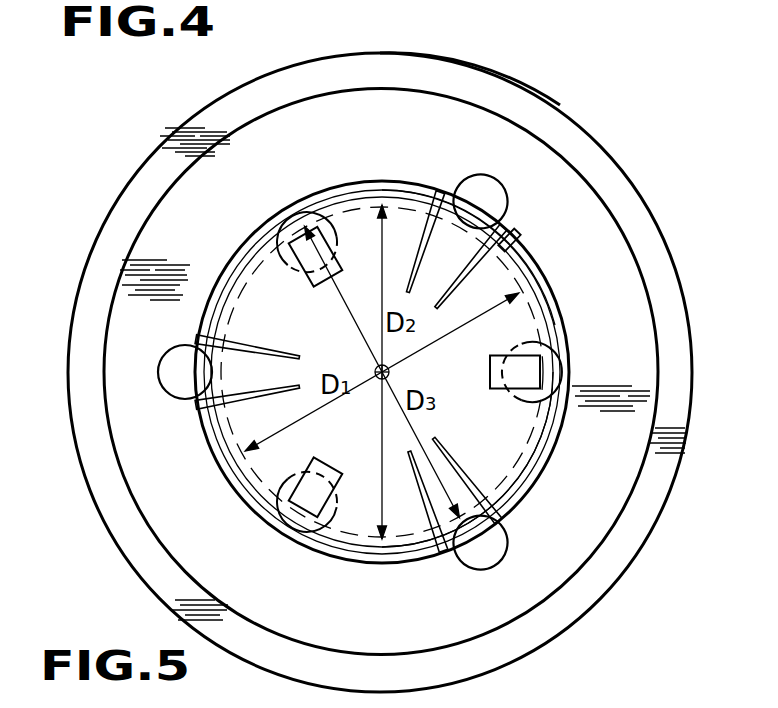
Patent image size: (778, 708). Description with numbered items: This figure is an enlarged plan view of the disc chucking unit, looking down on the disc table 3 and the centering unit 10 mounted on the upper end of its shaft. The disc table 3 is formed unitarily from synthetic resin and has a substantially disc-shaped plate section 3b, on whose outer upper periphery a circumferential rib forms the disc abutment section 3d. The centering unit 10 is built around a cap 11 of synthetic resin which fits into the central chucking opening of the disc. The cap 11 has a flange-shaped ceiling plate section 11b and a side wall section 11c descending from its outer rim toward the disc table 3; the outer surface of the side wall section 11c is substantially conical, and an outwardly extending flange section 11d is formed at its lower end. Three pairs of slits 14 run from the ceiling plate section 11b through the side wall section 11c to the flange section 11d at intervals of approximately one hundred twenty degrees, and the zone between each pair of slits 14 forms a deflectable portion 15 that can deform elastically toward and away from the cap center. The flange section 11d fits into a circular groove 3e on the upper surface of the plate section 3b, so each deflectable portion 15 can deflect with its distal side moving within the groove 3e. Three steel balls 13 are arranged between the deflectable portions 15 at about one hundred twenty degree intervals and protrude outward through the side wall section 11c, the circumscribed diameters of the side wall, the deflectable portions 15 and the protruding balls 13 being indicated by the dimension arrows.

The disc table 3 is at (618, 162).
The plate section 3b is at (500, 135).
The disc abutment section 3d is at (460, 75).
The circular groove 3e is at (505, 247).
The centering unit 10 is at (628, 318).
The cap 11 is at (548, 328).
The ceiling plate section 11b is at (540, 292).
The side wall section 11c is at (538, 427).
The flange section 11d is at (527, 484).
The steel ball 13 is at (306, 220).
The slit 14 is at (428, 218).
The deflectable portion 15 is at (455, 212).